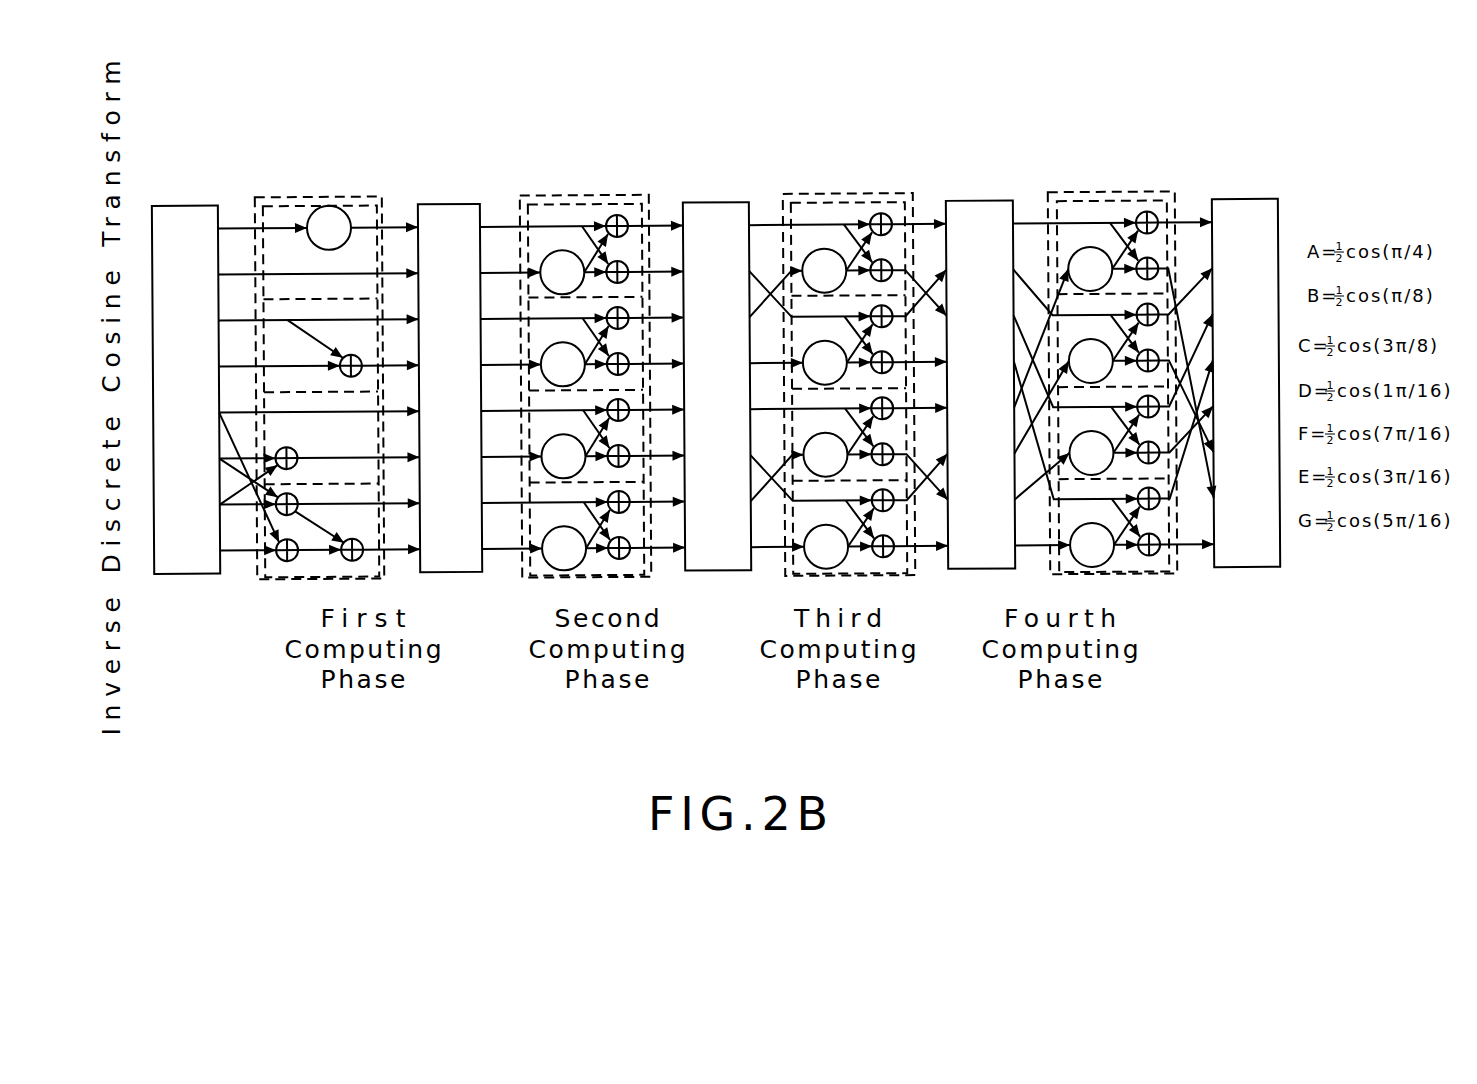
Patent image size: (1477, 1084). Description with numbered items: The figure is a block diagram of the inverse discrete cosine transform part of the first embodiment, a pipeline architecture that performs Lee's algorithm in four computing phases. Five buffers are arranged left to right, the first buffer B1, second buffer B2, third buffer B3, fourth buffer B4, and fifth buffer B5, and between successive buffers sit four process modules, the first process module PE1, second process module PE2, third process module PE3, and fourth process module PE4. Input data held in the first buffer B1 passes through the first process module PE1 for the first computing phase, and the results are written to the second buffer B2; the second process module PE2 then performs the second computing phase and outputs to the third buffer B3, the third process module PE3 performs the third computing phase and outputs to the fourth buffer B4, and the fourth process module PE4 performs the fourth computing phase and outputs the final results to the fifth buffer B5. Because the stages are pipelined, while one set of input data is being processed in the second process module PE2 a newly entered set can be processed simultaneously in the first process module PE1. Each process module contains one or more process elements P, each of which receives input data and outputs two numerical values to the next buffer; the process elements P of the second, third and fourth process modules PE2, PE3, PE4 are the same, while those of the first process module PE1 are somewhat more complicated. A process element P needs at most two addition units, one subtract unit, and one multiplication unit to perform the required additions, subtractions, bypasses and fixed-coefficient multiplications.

The first buffer B1 is at (168, 207).
The second buffer B2 is at (434, 206).
The third buffer B3 is at (700, 207).
The fourth buffer B4 is at (964, 207).
The fifth buffer B5 is at (1226, 207).
The first process module PE1 is at (252, 202).
The second process module PE2 is at (518, 204).
The third process module PE3 is at (782, 203).
The fourth process module PE4 is at (1046, 203).
The process element P is at (331, 206).